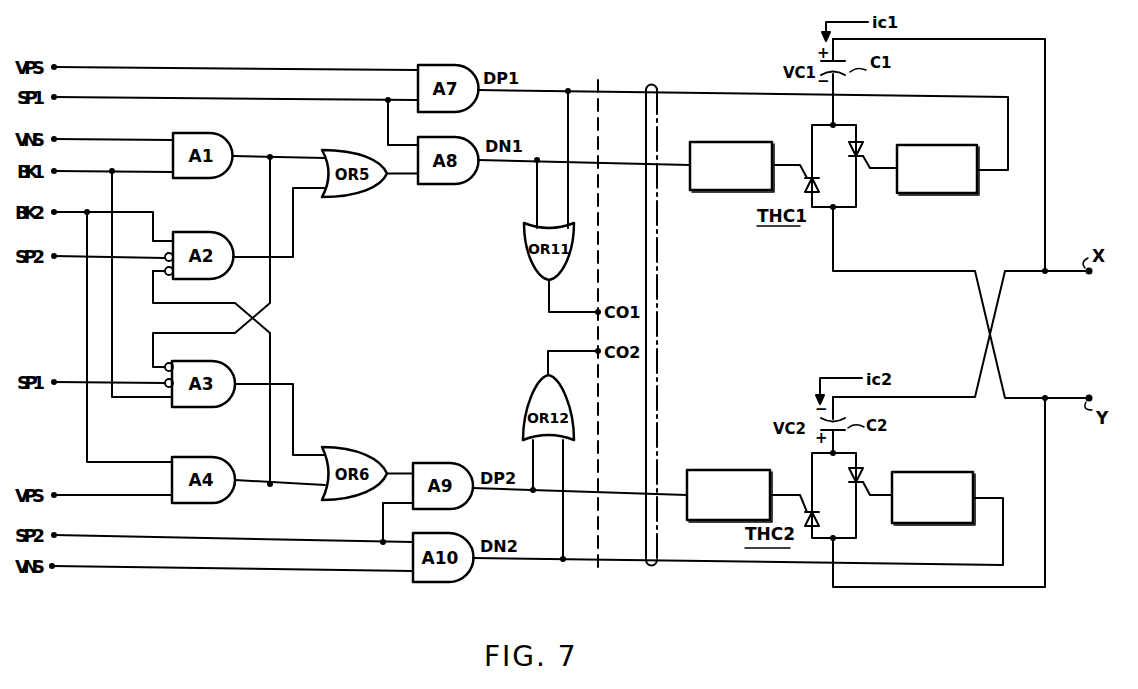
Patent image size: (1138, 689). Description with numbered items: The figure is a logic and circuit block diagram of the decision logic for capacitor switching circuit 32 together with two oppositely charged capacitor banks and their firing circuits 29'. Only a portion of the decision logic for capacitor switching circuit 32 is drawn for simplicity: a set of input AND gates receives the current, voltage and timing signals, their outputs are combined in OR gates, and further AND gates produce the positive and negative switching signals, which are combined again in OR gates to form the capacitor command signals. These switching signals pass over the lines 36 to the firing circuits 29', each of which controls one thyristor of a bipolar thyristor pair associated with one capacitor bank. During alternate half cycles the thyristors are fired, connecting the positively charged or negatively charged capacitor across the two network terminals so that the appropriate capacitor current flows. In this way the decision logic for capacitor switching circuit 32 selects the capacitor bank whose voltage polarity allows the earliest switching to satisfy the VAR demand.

The firing circuit 29' is at (838, 322).
The decision logic for capacitor switching circuit 32 is at (462, 341).
The lines 36 is at (652, 568).